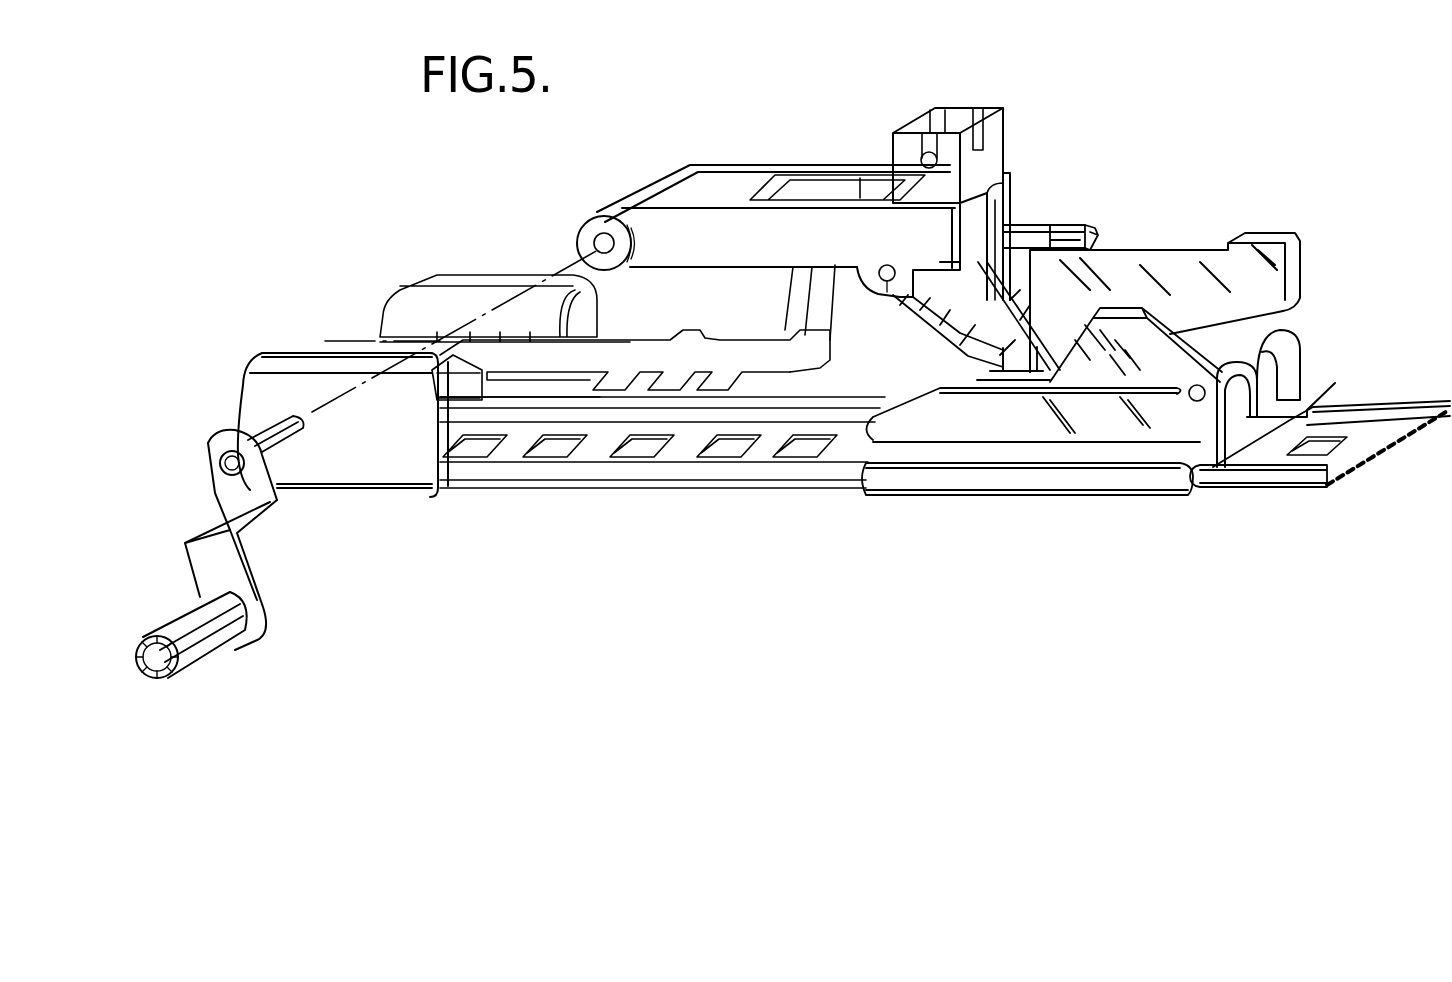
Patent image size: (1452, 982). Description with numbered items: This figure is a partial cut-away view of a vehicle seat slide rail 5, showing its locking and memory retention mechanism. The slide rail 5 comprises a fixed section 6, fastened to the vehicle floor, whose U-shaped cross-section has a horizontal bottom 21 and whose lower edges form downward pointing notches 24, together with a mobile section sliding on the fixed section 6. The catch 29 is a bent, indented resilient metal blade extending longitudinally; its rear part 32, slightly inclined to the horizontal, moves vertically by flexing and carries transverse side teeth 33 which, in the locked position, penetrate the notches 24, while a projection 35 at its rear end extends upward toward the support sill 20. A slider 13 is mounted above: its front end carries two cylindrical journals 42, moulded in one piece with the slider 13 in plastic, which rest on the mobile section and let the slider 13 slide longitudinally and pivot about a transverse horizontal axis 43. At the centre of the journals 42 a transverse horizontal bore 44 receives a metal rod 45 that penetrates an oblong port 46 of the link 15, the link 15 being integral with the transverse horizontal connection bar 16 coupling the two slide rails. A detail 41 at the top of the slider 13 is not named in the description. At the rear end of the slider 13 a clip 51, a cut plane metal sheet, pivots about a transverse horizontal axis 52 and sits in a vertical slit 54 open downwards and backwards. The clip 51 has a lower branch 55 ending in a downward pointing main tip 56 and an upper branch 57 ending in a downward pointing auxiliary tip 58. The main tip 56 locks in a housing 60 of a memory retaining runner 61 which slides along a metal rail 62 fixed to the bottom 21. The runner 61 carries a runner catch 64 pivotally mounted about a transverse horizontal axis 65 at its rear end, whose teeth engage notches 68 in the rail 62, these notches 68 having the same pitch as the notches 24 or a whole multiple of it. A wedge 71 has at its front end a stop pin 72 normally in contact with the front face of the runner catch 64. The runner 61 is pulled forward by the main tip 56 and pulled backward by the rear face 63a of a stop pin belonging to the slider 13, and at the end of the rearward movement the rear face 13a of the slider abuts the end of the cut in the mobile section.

The slide rail 5 is at (245, 360).
The fixed section 6 is at (260, 404).
The slider 13 is at (1018, 120).
The rear face 13a is at (980, 173).
The link 15 is at (247, 567).
The transverse horizontal connection bar 16 is at (192, 635).
The support sill 20 is at (827, 187).
The horizontal bottom 21 is at (443, 487).
The notches 24 is at (470, 380).
The catch 29 is at (829, 368).
The rear part 32 is at (733, 387).
The side teeth 33 is at (670, 388).
The projection 35 is at (810, 292).
The slot 41 is at (947, 110).
The cylindrical journals 42 is at (687, 165).
The transverse horizontal axis 43 is at (340, 397).
The transverse horizontal bore 44 is at (594, 240).
The metal rod 45 is at (222, 458).
The oblong port 46 is at (240, 478).
The clip 51 is at (933, 300).
The transverse horizontal axis 52 is at (887, 292).
The vertical slit 54 is at (990, 203).
The lower branch 55 is at (967, 307).
The main tip 56 is at (1020, 380).
The upper branch 57 is at (1020, 230).
The auxiliary tip 58 is at (1092, 243).
The housing 60 is at (1018, 377).
The memory retaining runner 61 is at (903, 455).
The metal rail 62 is at (1373, 447).
The rear face 63a is at (993, 325).
The runner catch 64 is at (1130, 357).
The transverse horizontal axis 65 is at (1199, 402).
The notches 68 is at (800, 445).
The wedge 71 is at (1250, 277).
The stop pin 72 is at (1047, 355).